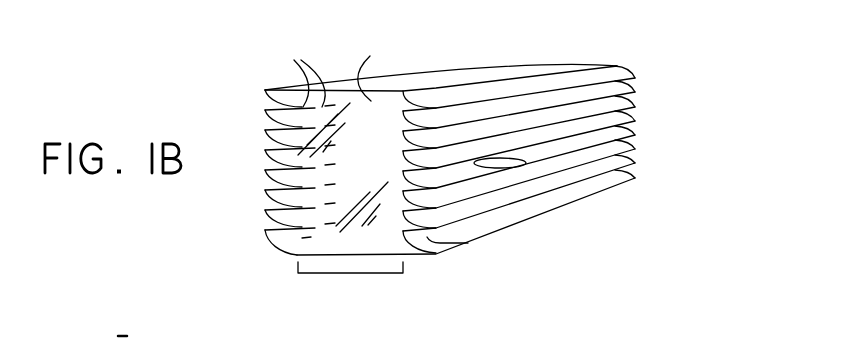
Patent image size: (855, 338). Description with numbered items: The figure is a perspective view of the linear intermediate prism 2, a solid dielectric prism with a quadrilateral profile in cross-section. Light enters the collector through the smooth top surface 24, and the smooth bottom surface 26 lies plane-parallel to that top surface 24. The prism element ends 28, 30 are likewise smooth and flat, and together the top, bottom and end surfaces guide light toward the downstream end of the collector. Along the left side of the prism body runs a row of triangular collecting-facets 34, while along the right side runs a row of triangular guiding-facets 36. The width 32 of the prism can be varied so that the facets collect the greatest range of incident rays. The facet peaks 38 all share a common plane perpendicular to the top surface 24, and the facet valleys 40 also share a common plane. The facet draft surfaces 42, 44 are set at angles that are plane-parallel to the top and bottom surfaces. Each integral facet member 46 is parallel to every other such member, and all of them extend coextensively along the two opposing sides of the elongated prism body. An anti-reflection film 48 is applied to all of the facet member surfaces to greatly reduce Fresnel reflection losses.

The linear intermediate prism 2 is at (375, 156).
The top surface 24 is at (431, 77).
The bottom surface 26 is at (415, 258).
The prism element end 28 is at (377, 71).
The prism element end 30 is at (587, 61).
The width 32 is at (364, 292).
The triangular collecting-facets 34 is at (263, 120).
The triangular guiding-facets 36 is at (638, 102).
The facet peaks 38 is at (267, 233).
The facet valleys 40 is at (300, 73).
The facet draft surface 42 is at (283, 178).
The facet draft surface 44 is at (470, 243).
The integral facet member 46 is at (596, 180).
The anti-reflection film 48 is at (527, 162).